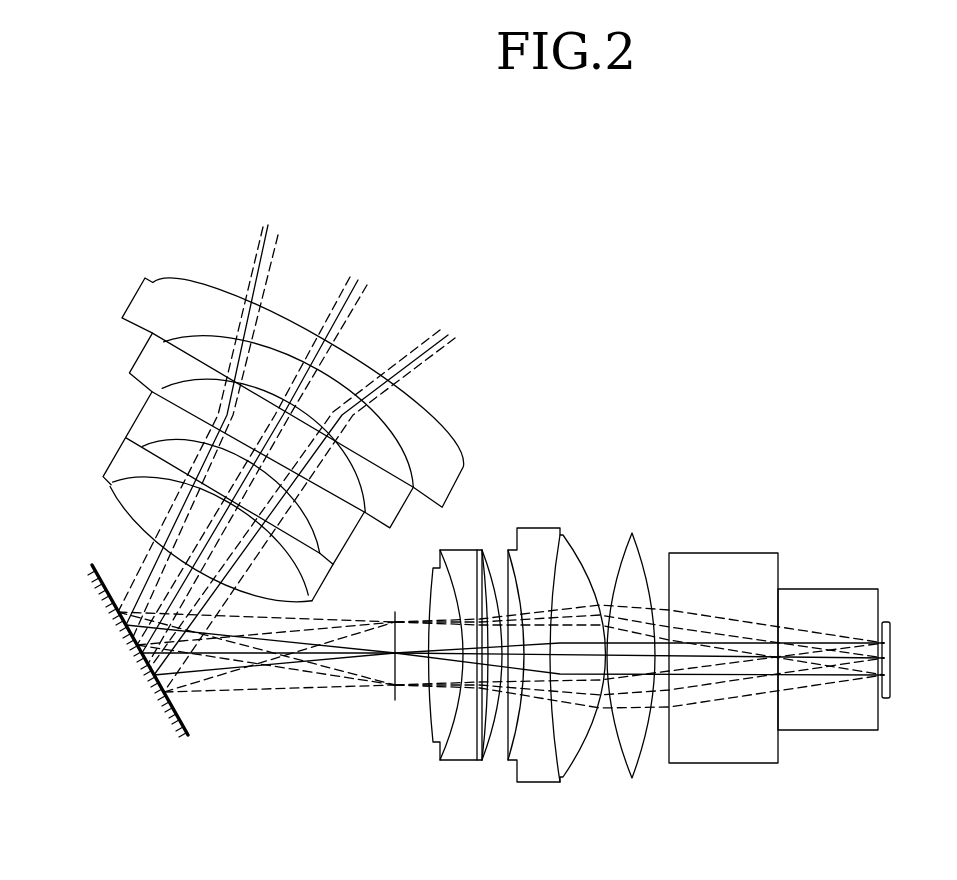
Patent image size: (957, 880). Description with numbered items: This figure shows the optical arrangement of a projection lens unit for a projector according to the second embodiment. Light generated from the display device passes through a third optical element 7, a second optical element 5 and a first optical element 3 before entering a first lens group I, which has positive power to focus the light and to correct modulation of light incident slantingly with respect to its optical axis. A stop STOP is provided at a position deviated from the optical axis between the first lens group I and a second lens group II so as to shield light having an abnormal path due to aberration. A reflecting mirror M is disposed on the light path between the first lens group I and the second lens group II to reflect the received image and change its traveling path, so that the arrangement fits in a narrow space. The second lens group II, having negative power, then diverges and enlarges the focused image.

The second lens group II is at (88, 277).
The reflecting mirror M is at (184, 742).
The stop STOP is at (395, 700).
The first lens group I is at (425, 802).
The first optical element 3 is at (725, 565).
The second optical element 5 is at (835, 600).
The third optical element 7 is at (888, 620).